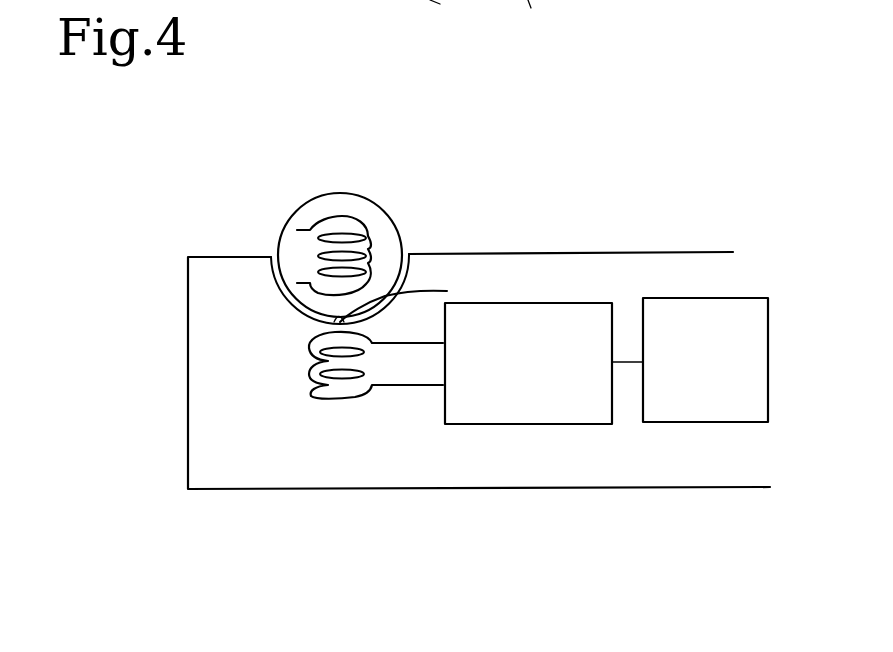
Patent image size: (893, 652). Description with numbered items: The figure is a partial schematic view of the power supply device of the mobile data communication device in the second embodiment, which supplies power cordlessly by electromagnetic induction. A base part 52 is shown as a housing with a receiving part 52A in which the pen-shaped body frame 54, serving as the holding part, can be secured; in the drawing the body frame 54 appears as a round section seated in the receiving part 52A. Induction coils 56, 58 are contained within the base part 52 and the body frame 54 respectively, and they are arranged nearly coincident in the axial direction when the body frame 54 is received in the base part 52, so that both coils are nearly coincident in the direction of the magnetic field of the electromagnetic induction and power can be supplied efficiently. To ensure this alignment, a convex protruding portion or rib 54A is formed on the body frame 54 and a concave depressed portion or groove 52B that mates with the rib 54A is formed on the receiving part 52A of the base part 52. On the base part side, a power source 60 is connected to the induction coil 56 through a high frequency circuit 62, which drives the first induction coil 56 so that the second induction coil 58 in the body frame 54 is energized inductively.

The base part 52 is at (238, 472).
The receiving part 52A is at (502, 22).
The groove 52B is at (316, 334).
The body frame 54 is at (397, 223).
The rib 54A is at (447, 291).
The induction coil 56 is at (318, 366).
The induction coil 58 is at (343, 217).
The power source 60 is at (662, 412).
The high frequency circuit 62 is at (532, 424).